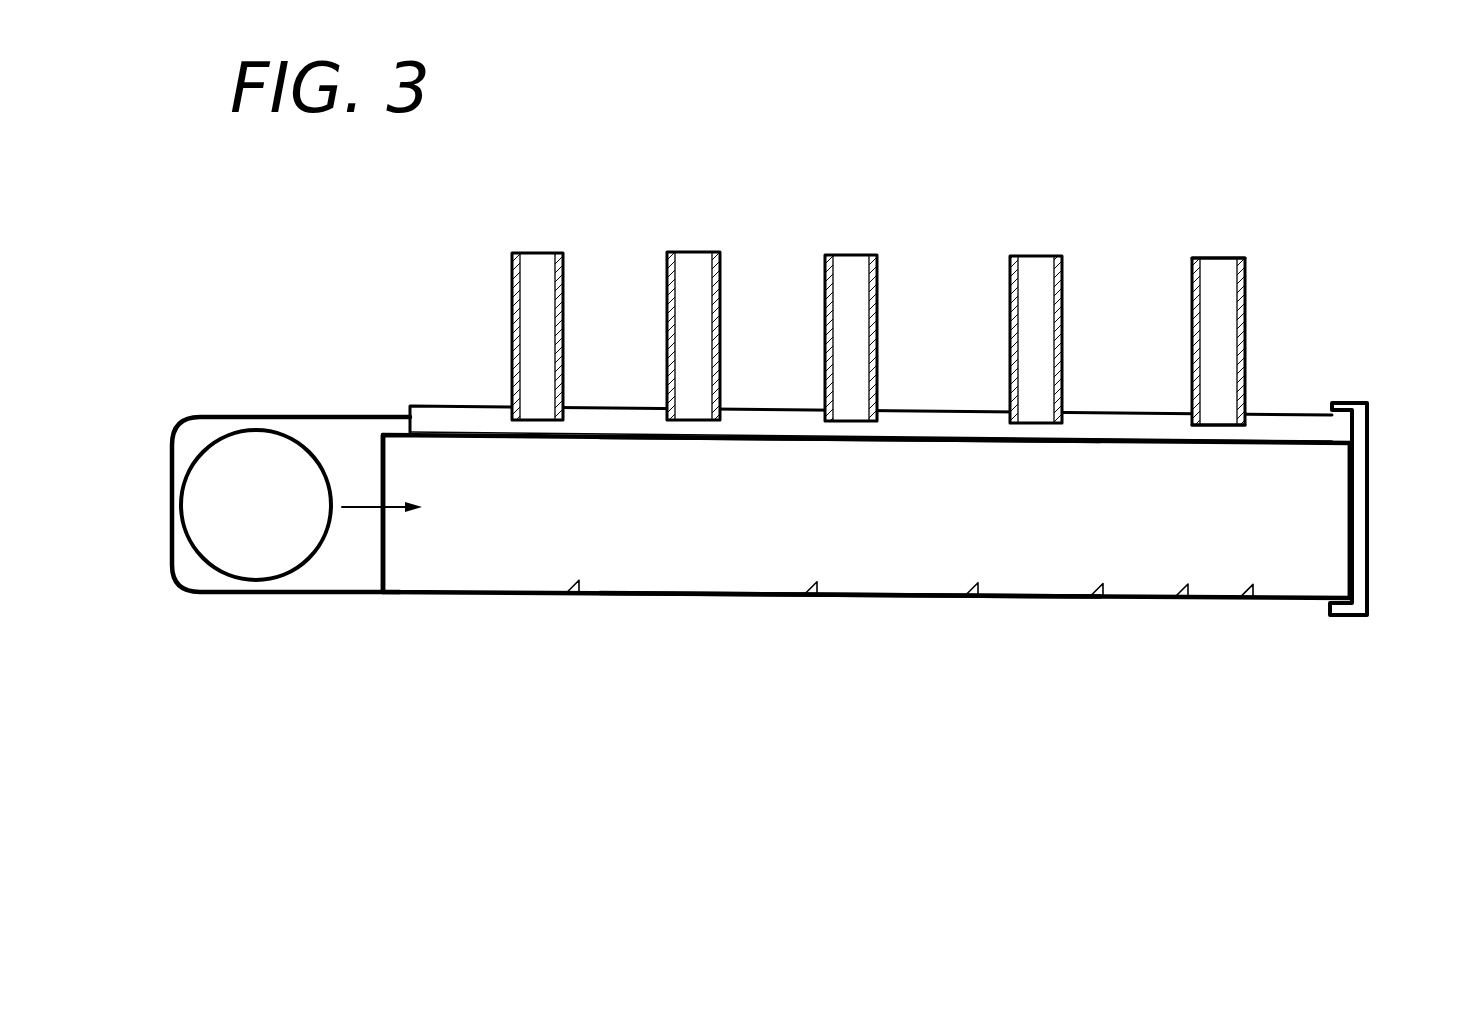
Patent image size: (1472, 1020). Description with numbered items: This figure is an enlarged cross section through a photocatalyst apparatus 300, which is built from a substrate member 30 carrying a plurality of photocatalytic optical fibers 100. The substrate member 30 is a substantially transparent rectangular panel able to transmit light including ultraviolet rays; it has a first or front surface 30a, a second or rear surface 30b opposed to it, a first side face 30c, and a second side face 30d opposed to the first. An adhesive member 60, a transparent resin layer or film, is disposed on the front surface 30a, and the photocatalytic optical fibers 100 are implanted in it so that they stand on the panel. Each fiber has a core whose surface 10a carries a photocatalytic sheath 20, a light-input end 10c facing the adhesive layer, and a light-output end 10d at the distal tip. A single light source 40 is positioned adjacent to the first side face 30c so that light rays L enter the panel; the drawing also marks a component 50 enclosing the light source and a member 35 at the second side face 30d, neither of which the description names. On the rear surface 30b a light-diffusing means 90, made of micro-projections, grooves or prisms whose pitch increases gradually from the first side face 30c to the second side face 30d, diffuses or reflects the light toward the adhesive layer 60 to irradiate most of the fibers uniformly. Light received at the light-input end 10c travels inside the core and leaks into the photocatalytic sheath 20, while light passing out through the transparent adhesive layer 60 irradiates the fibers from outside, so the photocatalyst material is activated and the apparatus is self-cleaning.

The surface of the core 10a is at (1223, 317).
The light-input end 10c is at (1218, 425).
The light-output end 10d is at (1220, 258).
The photocatalytic sheath 20 is at (1248, 272).
The substrate member 30 is at (735, 517).
The first surface 30a is at (817, 443).
The second surface 30b is at (918, 596).
The first side face 30c is at (382, 480).
The second side face 30d is at (1350, 523).
The end cap 35 is at (1367, 545).
The light source 40 is at (255, 537).
The lamp housing 50 is at (197, 592).
The adhesive member 60 is at (460, 405).
The light-diffusing means 90 is at (572, 600).
The photocatalytic optical fiber 100 is at (668, 288).
The photocatalyst apparatus 300 is at (1350, 720).
The light L is at (360, 507).